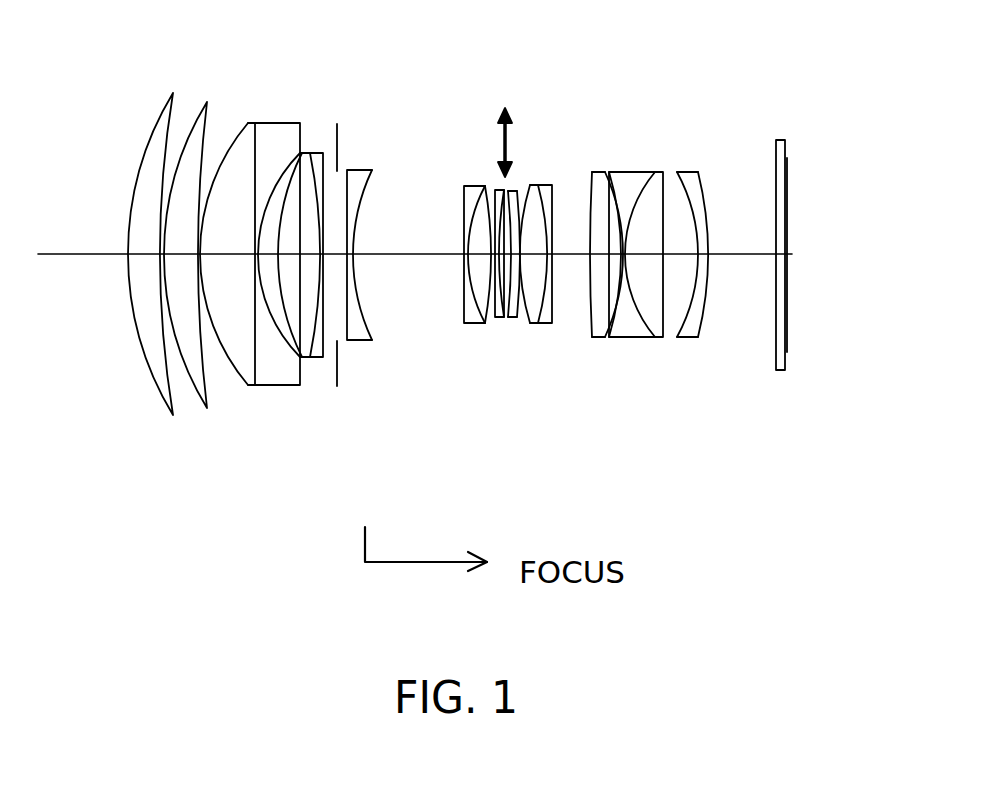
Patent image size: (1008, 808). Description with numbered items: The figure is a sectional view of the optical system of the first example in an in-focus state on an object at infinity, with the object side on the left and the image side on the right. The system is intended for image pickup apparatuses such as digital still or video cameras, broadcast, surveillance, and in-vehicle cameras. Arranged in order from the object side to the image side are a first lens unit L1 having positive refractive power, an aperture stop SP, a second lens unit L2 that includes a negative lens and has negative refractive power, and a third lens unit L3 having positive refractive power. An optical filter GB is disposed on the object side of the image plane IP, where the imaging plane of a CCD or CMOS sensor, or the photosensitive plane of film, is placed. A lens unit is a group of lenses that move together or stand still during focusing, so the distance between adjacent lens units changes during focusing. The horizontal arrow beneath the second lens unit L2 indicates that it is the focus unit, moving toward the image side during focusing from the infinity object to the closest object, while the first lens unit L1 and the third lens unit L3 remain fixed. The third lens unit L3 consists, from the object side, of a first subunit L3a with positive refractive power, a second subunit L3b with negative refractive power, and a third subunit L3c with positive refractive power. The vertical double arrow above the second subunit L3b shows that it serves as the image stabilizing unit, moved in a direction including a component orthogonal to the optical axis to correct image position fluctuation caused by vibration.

The first lens unit L1 is at (133, 453).
The second lens unit L2 is at (343, 453).
The third lens unit L3 is at (579, 314).
The first subunit L3a is at (487, 367).
The second subunit L3b is at (490, 367).
The third subunit L3c is at (615, 300).
The aperture stop SP is at (337, 121).
The optical filter GB is at (775, 453).
The image plane IP is at (792, 152).